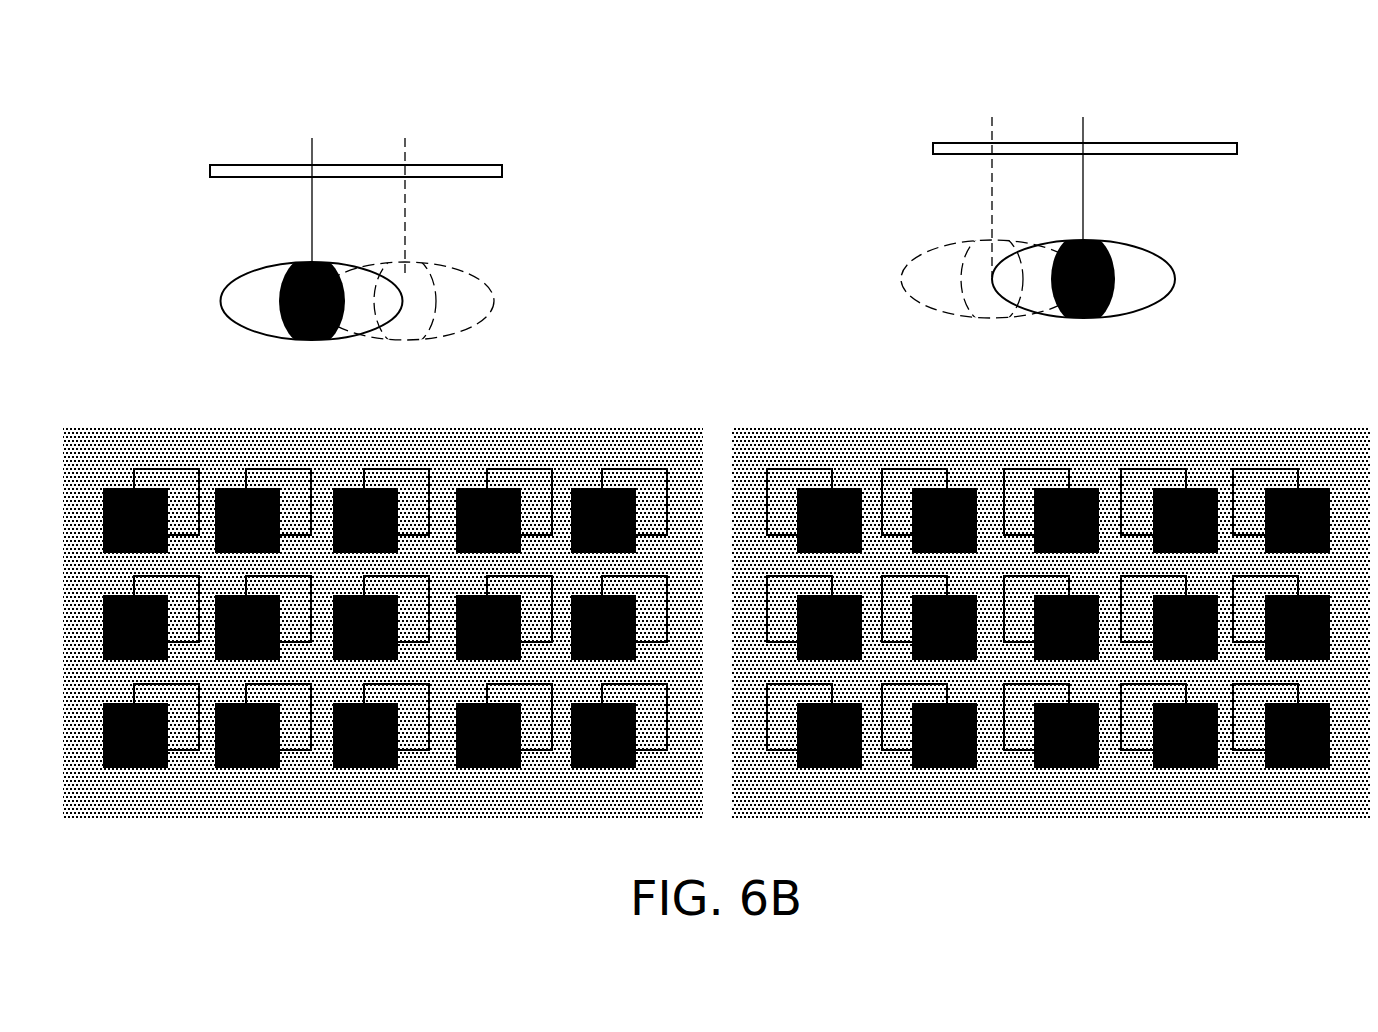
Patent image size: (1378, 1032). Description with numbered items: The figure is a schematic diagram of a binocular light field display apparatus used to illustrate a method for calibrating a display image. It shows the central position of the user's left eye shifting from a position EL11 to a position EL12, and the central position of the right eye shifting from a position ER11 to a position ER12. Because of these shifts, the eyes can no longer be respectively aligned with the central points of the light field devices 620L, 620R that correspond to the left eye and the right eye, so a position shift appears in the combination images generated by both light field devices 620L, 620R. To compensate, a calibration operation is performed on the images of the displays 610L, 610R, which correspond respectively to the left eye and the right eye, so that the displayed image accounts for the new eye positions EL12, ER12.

The position EL11 is at (312, 130).
The position EL12 is at (405, 130).
The position ER11 is at (1083, 108).
The position ER12 is at (992, 108).
The light field device 620L is at (483, 165).
The light field device 620R is at (1210, 143).
The display 610L is at (675, 428).
The display 610R is at (1343, 428).